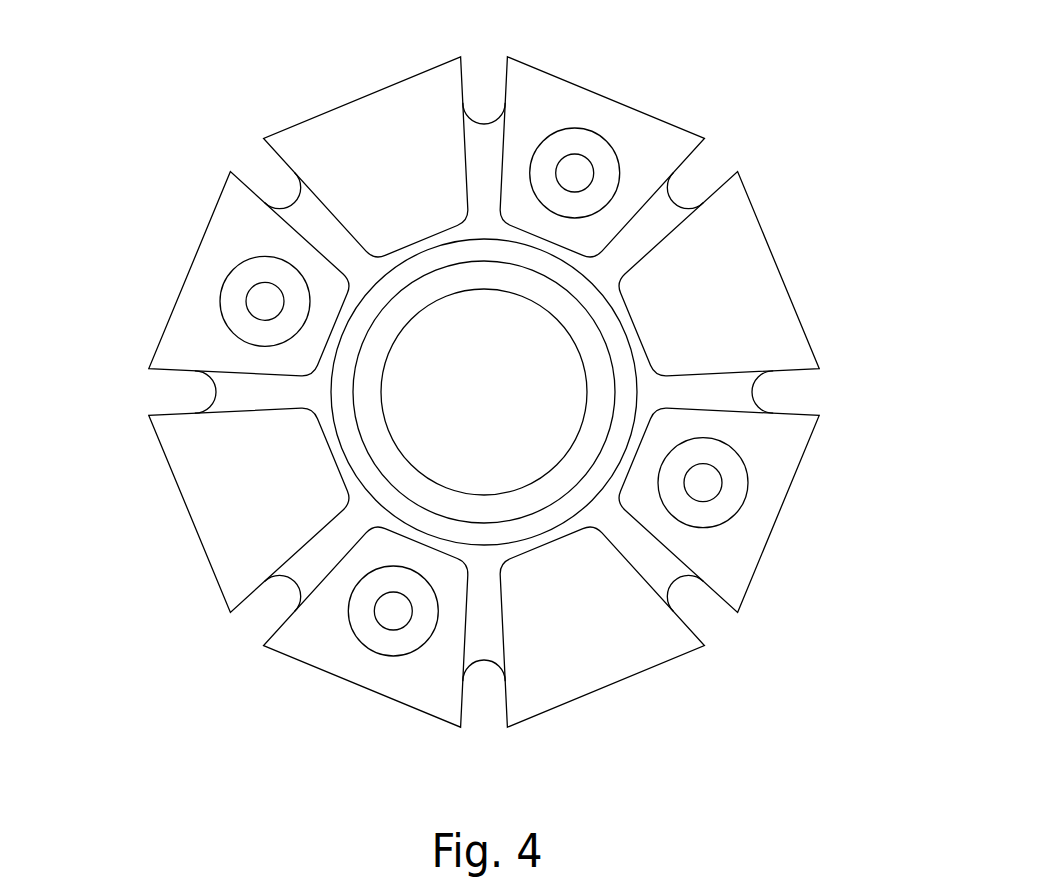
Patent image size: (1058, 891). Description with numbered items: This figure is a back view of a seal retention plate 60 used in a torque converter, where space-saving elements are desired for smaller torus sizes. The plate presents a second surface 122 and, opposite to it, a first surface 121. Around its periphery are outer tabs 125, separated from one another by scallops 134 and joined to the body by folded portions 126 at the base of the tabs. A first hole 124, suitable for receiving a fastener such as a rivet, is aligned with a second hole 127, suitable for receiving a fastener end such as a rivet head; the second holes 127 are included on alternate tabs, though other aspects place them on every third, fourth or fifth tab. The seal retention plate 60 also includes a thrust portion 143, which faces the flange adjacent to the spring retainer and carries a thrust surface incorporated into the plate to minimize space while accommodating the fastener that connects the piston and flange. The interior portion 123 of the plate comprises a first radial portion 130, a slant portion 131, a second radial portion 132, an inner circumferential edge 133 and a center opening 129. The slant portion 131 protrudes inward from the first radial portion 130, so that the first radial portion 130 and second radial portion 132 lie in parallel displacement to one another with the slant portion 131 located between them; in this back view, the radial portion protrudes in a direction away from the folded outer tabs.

The seal retention plate 60 is at (150, 142).
The first surface 121 is at (190, 457).
The second surface 122 is at (230, 397).
The interior portion 123 is at (307, 570).
The first hole 124 is at (572, 153).
The outer tabs 125 is at (427, 98).
The folded portions 126 is at (775, 262).
The second hole 127 is at (622, 168).
The center opening 129 is at (530, 465).
The first radial portion 130 is at (362, 510).
The slant portion 131 is at (487, 537).
The second radial portion 132 is at (502, 508).
The inner circumferential edge 133 is at (585, 370).
The scallops 134 is at (290, 197).
The thrust portion 143 is at (245, 508).